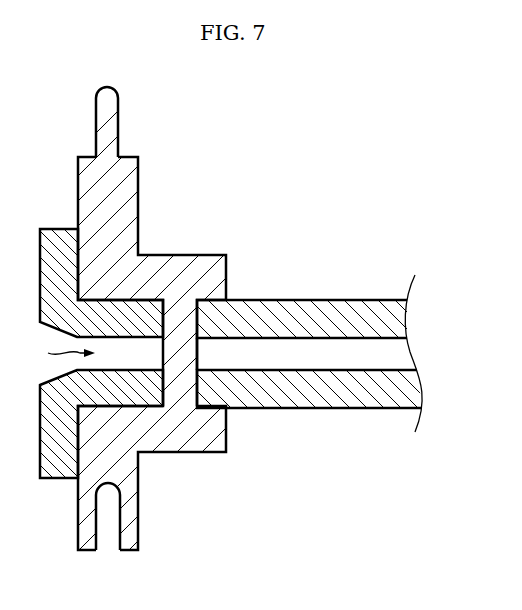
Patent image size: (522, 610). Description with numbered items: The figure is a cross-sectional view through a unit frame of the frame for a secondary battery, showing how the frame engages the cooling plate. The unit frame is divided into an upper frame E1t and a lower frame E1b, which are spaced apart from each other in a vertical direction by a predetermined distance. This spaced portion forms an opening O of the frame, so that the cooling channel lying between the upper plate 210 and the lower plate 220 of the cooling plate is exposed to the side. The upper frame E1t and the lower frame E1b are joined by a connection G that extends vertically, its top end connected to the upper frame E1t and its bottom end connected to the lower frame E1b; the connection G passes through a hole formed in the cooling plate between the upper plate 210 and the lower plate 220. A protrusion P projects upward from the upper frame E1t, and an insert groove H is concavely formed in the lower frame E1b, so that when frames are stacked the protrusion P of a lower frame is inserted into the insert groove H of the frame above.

The protrusion P is at (115, 100).
The upper frame E1t is at (138, 196).
The lower frame E1b is at (133, 507).
The insert groove H is at (107, 543).
The connection G is at (193, 355).
The opening O is at (63, 356).
The upper plate 210 is at (332, 300).
The lower plate 220 is at (332, 408).